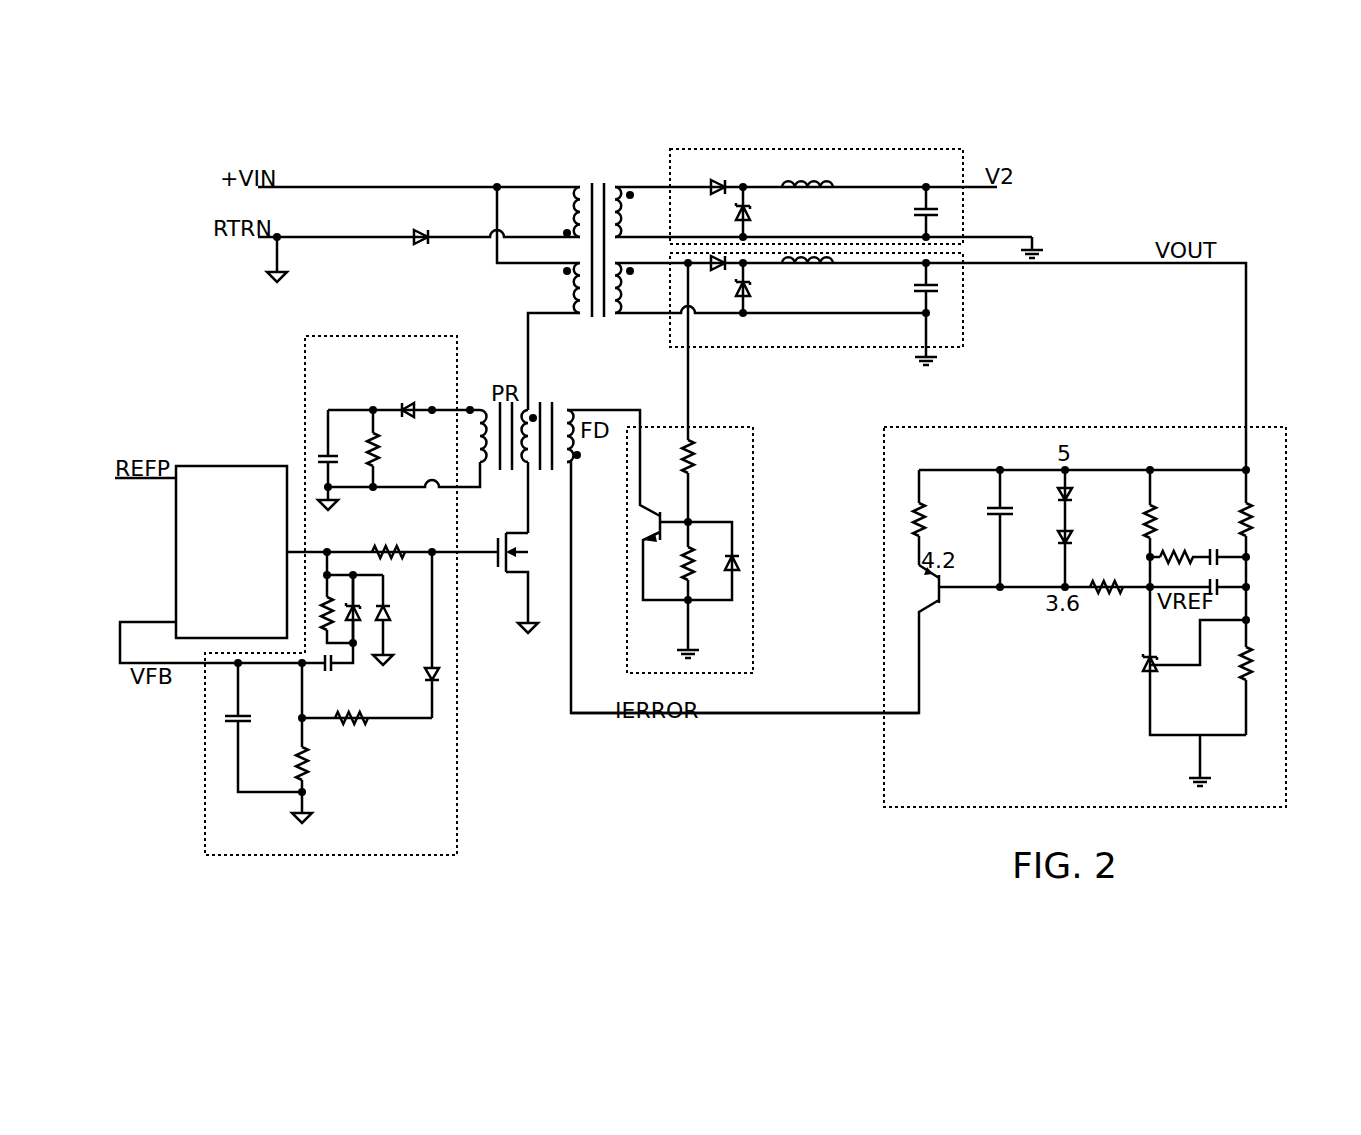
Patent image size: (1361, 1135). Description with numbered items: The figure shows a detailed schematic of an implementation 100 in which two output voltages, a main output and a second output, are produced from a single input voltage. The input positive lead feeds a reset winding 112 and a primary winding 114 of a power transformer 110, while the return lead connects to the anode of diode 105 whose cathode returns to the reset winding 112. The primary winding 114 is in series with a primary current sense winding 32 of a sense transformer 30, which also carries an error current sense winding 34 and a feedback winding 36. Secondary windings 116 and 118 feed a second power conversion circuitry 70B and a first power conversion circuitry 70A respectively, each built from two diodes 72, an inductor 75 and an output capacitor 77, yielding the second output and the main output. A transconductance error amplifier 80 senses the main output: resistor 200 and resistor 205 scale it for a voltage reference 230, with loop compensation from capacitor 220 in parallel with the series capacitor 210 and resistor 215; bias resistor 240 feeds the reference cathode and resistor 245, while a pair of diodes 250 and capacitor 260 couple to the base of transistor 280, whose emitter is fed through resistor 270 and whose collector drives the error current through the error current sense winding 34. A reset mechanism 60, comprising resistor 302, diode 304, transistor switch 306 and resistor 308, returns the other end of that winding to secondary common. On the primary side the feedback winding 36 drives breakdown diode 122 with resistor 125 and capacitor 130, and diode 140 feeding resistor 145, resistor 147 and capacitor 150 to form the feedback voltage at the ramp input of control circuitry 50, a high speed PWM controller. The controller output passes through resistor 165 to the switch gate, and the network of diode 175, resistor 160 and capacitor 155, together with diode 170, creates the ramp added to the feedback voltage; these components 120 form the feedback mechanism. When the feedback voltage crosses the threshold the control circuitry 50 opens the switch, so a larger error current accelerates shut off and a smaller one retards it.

The implementation 100 is at (406, 153).
The unidirectional electronic valve 105 is at (423, 245).
The power transformer 110 is at (598, 183).
The reset winding 112 is at (578, 185).
The primary winding 114 is at (580, 318).
The secondary winding 116 is at (617, 183).
The secondary winding 118 is at (616, 318).
The gate drive circuit 120 is at (362, 336).
The breakdown diode 122 is at (408, 403).
The resistor 125 is at (372, 432).
The capacitor 130 is at (320, 455).
The unidirectional electronic valve 140 is at (440, 677).
The resistor 145 is at (365, 725).
The resistor 147 is at (308, 772).
The capacitor 150 is at (225, 718).
The capacitor 155 is at (330, 675).
The resistor 160 is at (325, 582).
The resistor 165 is at (385, 544).
The unidirectional electronic valve 170 is at (390, 614).
The unidirectional electronic valve 175 is at (357, 625).
The control circuitry 50 is at (245, 466).
The sense transformer 30 is at (500, 470).
The primary current sense winding 32 is at (530, 465).
The error current sense winding 34 is at (530, 408).
The feedback winding 36 is at (480, 405).
The bias resistor 240 is at (532, 560).
The reset mechanism 60 is at (753, 467).
The resistor 302 is at (695, 458).
The unidirectional electronic valve 304 is at (740, 563).
The electronically controlled switch 306 is at (657, 512).
The resistor 308 is at (683, 570).
The first power conversion circuitry 70A is at (963, 330).
The second power conversion circuitry 70B is at (930, 149).
The unidirectional electronic valve 72 is at (718, 180).
The inductor 75 is at (808, 182).
The output capacitor 77 is at (938, 213).
The transconductance error amplifier 80 is at (1286, 740).
The resistor 200 is at (1262, 520).
The resistor 205 is at (1262, 668).
The capacitor 210 is at (1258, 552).
The resistor 215 is at (1157, 550).
The capacitor 220 is at (1258, 585).
The voltage reference 230 is at (1140, 665).
The resistor 245 is at (1110, 595).
The pair of diodes 250 is at (1070, 495).
The capacitor 260 is at (1003, 512).
The resistor 270 is at (922, 520).
The transistor 280 is at (937, 603).